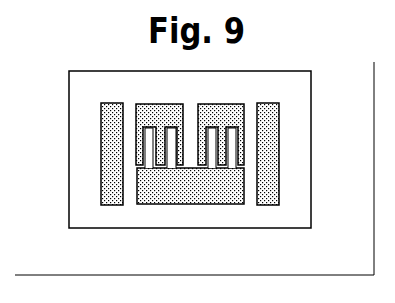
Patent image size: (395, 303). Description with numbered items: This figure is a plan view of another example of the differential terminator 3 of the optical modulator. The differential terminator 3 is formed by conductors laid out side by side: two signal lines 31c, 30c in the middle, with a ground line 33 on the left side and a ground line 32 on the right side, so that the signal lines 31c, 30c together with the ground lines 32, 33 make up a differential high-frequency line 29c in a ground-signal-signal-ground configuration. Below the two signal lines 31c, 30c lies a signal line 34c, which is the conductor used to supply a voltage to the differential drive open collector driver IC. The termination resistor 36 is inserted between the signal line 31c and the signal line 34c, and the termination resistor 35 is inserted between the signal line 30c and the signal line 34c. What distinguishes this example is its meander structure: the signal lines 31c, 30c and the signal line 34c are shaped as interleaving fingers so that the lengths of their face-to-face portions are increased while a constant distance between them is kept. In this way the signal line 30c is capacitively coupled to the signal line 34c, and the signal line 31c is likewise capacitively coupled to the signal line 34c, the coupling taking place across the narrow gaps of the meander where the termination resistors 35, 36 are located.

The differential terminator 3 is at (313, 107).
The differential high-frequency line 29c is at (207, 95).
The signal line 30c is at (244, 122).
The signal line 31c is at (139, 113).
The ground line 32 is at (270, 193).
The ground line 33 is at (103, 191).
The signal line 34c is at (182, 205).
The termination resistor 35 is at (218, 170).
The termination resistor 36 is at (158, 170).